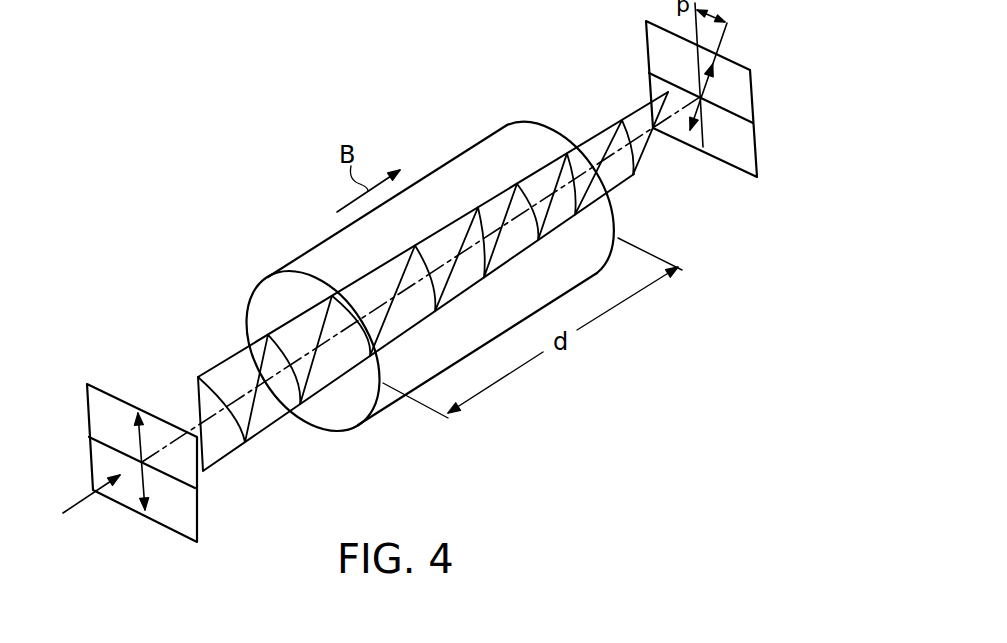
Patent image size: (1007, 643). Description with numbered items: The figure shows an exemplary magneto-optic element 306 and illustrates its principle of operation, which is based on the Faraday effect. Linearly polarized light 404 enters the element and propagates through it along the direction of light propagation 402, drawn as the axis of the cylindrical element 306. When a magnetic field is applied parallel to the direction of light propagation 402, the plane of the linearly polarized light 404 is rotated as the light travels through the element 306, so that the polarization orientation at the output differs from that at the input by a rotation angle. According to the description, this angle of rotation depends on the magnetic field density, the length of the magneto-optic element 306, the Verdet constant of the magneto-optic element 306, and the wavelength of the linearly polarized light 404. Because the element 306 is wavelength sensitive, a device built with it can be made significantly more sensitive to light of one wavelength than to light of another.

The magneto-optic element 306 is at (482, 142).
The direction of light propagation 402 is at (76, 505).
The linearly polarized light 404 is at (216, 368).